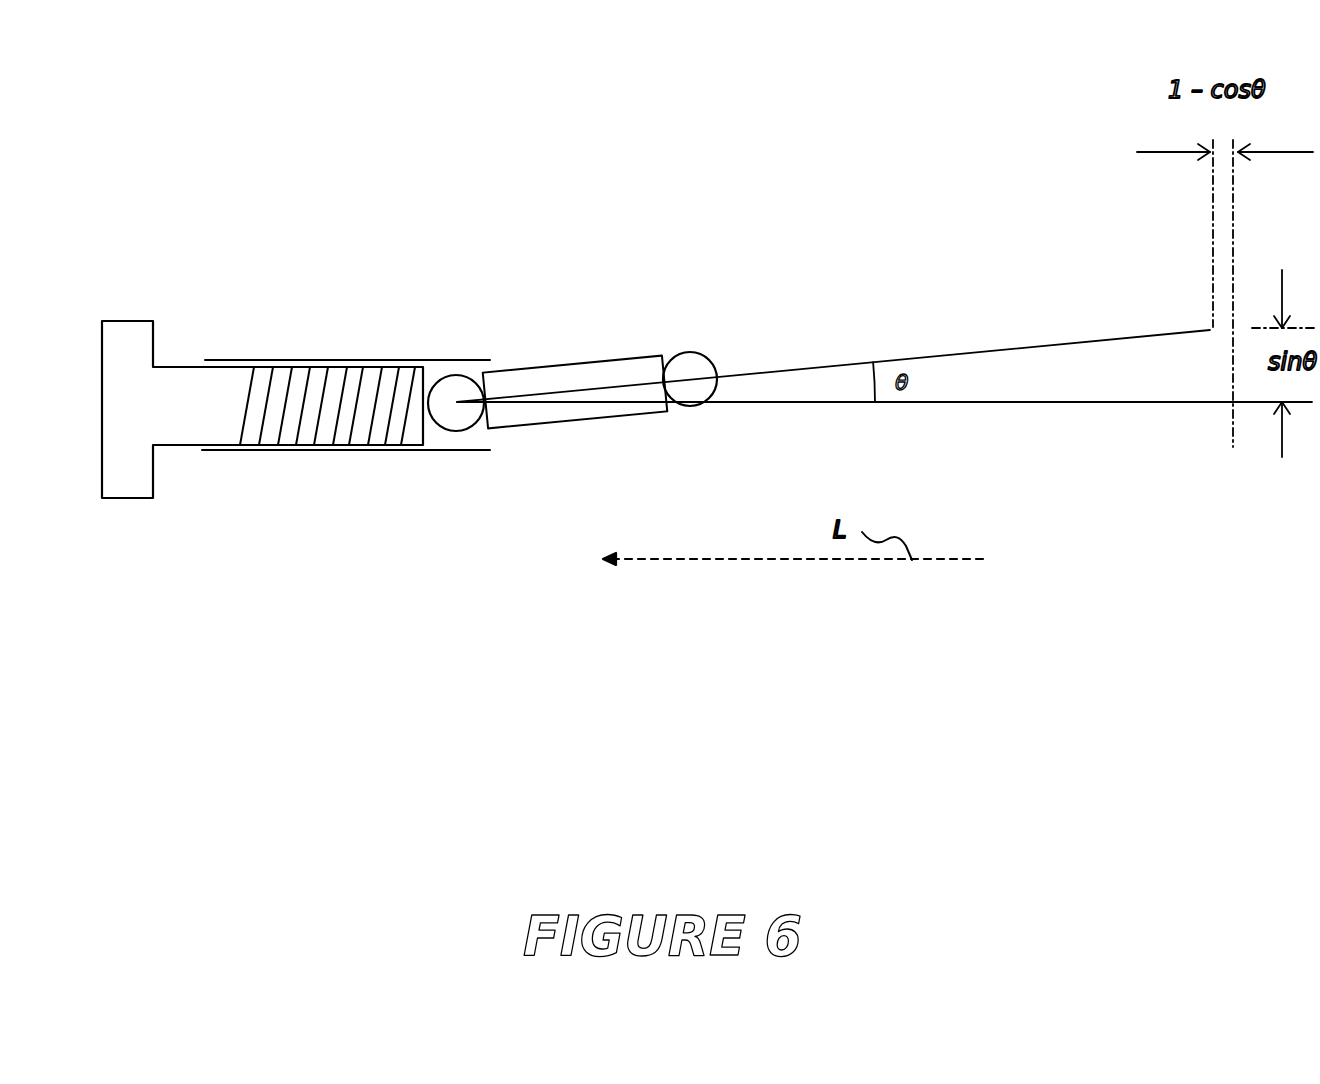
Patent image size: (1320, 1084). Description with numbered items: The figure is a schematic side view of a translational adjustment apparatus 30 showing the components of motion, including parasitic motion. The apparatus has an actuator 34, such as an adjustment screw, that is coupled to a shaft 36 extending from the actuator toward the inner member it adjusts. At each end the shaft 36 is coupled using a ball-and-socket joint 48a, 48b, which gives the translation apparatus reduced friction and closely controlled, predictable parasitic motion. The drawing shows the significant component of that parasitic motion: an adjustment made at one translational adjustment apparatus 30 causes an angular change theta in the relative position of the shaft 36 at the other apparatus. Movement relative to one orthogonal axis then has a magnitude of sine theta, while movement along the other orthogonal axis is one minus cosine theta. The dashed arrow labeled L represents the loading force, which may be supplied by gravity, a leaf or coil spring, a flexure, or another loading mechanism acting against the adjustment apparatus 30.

The translational adjustment apparatus 30 is at (289, 223).
The actuator 34 is at (303, 445).
The shaft 36 is at (557, 365).
The ball-and-socket joint 48a is at (438, 432).
The ball-and-socket joint 48b is at (712, 360).